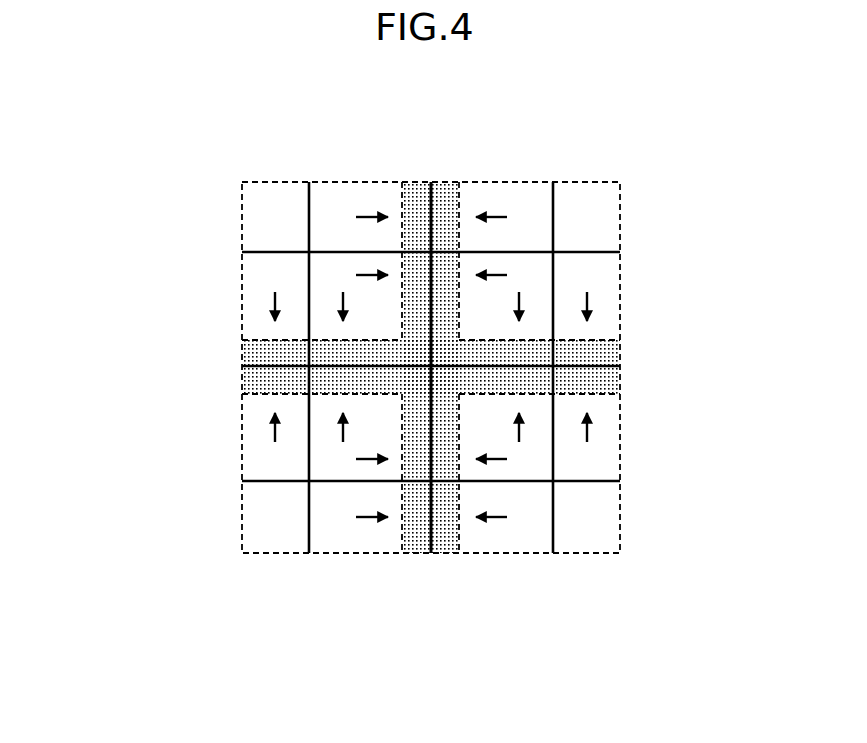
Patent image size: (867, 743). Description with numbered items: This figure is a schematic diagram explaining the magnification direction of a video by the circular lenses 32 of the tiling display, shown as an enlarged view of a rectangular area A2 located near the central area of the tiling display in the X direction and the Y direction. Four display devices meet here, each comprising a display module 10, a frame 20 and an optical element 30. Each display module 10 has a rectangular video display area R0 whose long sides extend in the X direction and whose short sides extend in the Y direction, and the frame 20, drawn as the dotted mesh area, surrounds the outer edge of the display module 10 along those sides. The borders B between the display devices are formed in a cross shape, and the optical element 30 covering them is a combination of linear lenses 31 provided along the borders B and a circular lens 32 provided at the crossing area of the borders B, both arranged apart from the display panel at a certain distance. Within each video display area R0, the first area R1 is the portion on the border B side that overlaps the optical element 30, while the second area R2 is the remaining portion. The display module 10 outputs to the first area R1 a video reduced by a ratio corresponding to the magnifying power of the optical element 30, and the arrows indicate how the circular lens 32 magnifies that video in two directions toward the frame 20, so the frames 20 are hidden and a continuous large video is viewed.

The display module 10 is at (281, 190).
The frame 20 is at (415, 190).
The optical element 30 is at (434, 369).
The linear lens 31 is at (330, 190).
The circular lens 32 is at (393, 190).
The rectangular area A2 is at (255, 182).
The border B is at (438, 190).
The video display area R0 is at (180, 222).
The first area R1 is at (254, 286).
The second area R2 is at (254, 218).
The X direction X is at (468, 685).
The Y direction Y is at (52, 344).